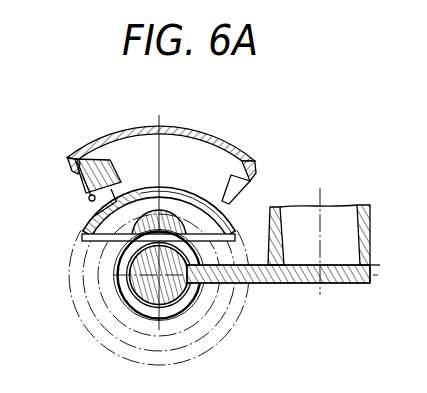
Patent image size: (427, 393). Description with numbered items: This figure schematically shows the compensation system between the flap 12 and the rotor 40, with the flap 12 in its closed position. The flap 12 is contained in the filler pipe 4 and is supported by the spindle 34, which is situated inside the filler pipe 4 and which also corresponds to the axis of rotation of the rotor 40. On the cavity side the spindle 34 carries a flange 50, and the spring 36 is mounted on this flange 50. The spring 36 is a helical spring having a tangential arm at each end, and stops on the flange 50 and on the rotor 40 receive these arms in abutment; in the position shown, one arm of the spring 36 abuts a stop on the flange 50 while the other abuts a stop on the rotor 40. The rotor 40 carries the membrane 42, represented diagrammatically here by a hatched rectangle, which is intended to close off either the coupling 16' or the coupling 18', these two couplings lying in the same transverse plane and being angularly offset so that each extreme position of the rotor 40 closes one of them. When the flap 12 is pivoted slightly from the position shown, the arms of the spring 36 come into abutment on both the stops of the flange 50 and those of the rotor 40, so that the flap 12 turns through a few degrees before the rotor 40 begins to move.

The filler pipe 4 is at (347, 249).
The flap 12 is at (327, 280).
The coupling 16' is at (54, 182).
The coupling 18' is at (262, 182).
The spindle 34 is at (147, 288).
The spring 36 is at (193, 297).
The rotor 40 is at (167, 190).
The membrane 42 is at (103, 168).
The flange 50 is at (87, 223).